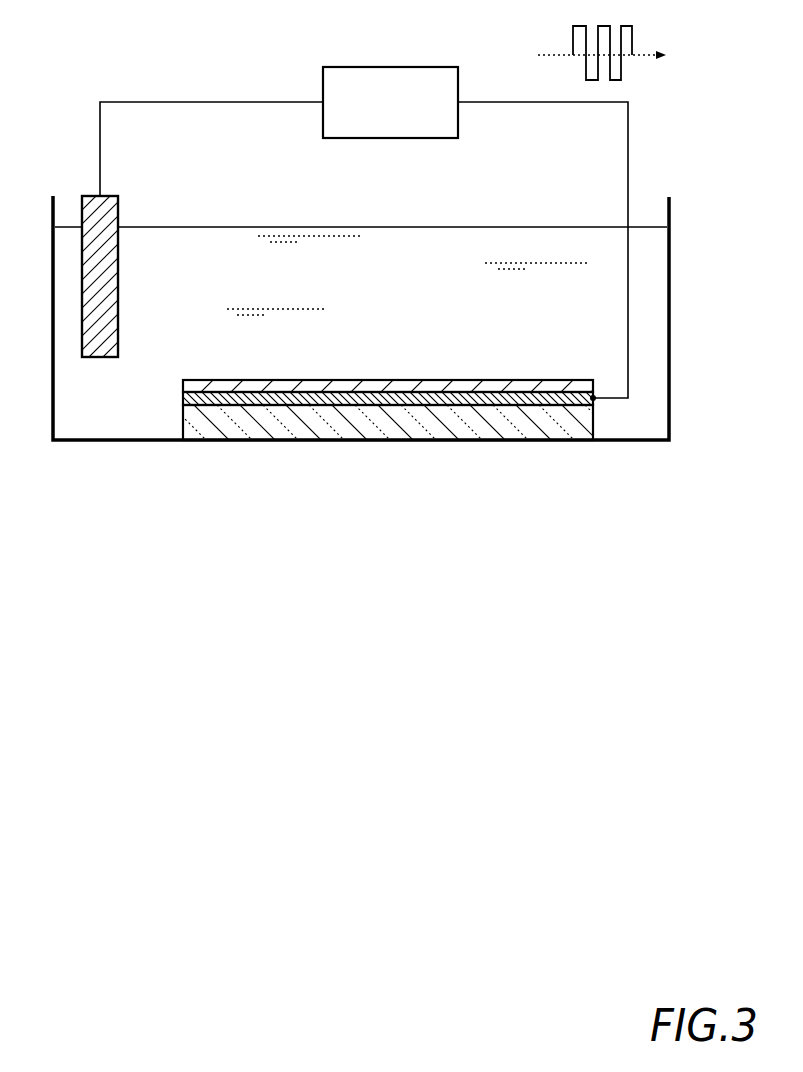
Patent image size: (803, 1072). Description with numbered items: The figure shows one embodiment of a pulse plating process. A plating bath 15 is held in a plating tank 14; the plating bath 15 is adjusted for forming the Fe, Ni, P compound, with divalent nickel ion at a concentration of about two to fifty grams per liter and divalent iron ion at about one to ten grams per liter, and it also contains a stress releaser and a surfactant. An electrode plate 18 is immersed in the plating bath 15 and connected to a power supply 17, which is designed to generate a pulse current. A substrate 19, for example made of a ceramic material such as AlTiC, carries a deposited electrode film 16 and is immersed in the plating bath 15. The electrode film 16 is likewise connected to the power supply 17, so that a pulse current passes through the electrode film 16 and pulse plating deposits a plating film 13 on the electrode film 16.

The plating film 13 is at (243, 380).
The plating tank 14 is at (672, 280).
The plating bath 15 is at (195, 287).
The electrode film 16 is at (386, 397).
The power supply 17 is at (410, 116).
The electrode plate 18 is at (94, 305).
The substrate 19 is at (500, 418).